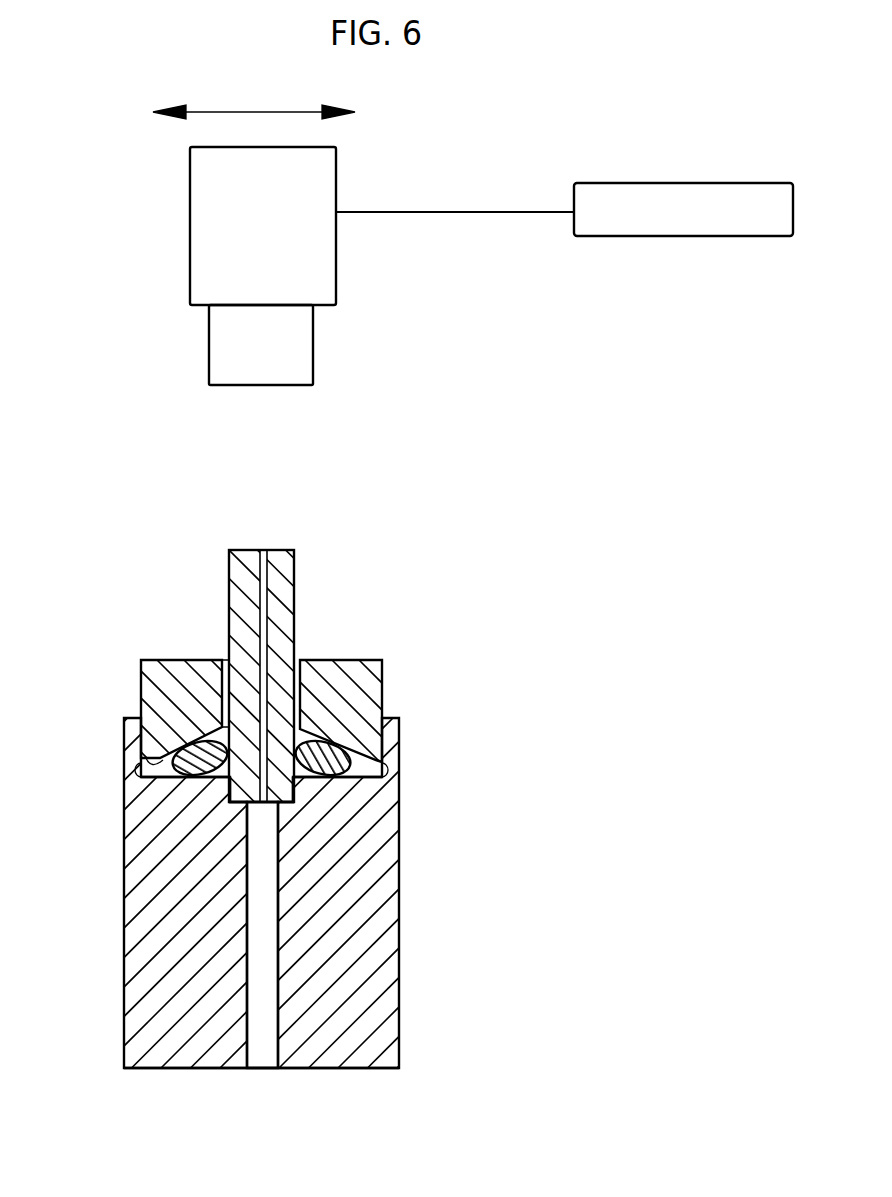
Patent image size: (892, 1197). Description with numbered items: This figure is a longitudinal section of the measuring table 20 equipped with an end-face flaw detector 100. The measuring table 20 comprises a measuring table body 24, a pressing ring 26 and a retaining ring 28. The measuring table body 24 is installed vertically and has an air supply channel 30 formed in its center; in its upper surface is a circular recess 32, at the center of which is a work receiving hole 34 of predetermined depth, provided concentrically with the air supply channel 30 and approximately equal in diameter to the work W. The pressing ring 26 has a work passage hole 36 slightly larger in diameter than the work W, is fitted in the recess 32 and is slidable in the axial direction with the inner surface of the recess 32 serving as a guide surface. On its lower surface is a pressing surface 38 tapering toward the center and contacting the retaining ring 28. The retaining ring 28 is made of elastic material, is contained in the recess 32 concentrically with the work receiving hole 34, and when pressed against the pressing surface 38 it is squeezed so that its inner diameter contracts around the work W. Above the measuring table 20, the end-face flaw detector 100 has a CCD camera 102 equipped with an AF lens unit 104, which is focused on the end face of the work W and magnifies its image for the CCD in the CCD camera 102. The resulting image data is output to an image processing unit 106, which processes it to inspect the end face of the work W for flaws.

The end-face flaw detector 100 is at (518, 92).
The CCD camera 102 is at (190, 271).
The AF lens unit 104 is at (316, 362).
The image processing unit 106 is at (718, 183).
The measuring table 20 is at (483, 648).
The measuring table body 24 is at (387, 878).
The pressing ring 26 is at (150, 690).
The retaining ring 28 is at (338, 757).
The air supply channel 30 is at (263, 1012).
The circular recess 32 is at (138, 783).
The work receiving hole 34 is at (228, 800).
The work passage hole 36 is at (230, 663).
The pressing surface 38 is at (152, 760).
The work W is at (290, 643).